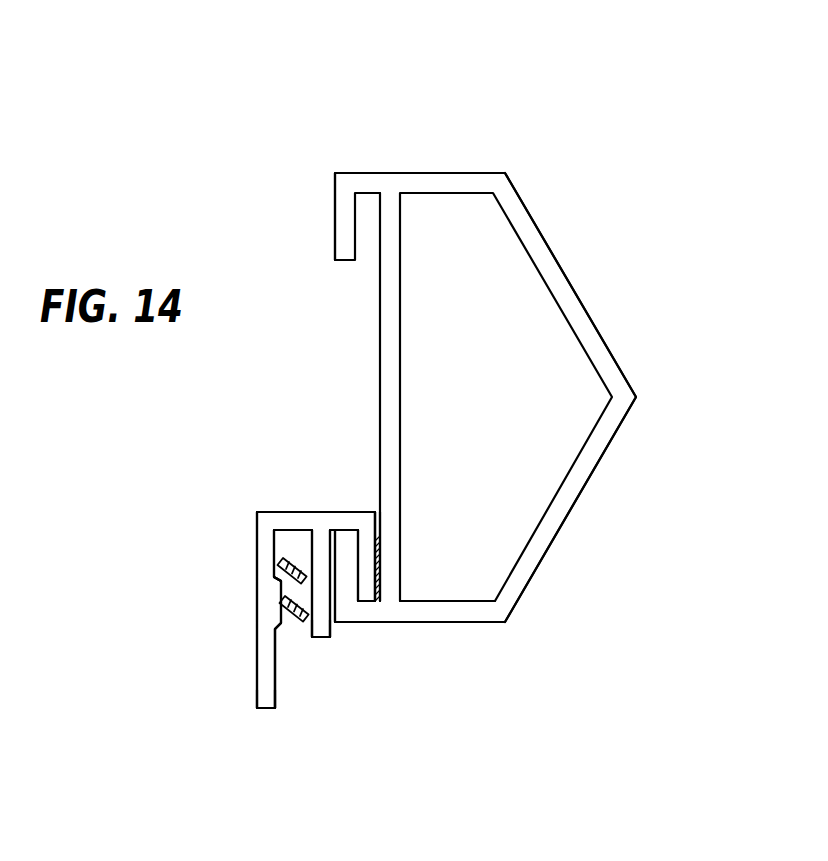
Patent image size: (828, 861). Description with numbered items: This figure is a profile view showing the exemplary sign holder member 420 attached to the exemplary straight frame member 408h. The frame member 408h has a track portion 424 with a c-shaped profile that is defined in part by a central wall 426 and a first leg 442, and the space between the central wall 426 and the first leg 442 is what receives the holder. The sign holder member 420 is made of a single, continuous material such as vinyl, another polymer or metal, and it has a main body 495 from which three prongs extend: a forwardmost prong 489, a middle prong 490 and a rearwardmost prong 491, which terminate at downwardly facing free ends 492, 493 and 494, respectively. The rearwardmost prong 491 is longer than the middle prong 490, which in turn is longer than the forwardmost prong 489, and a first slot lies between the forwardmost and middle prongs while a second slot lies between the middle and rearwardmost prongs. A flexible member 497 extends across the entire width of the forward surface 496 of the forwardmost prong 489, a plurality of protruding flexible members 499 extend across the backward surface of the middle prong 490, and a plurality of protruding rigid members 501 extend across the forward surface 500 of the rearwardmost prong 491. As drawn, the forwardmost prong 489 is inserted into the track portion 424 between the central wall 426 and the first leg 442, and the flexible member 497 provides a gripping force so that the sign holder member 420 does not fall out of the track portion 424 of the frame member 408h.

The straight frame member 408h is at (662, 145).
The track portion 424 is at (402, 160).
The central wall 426 is at (403, 418).
The sign holder member 420 is at (265, 490).
The middle prong 490 is at (313, 550).
The main body 495 is at (323, 517).
The forward surface 496 is at (377, 515).
The forwardmost prong 489 is at (367, 540).
The flexible member 497 is at (377, 553).
The first leg 442 is at (347, 580).
The protruding flexible members 499 is at (305, 583).
The protruding rigid members 501 is at (269, 622).
The rearwardmost prong 491 is at (258, 660).
The free end 493 is at (317, 637).
The free end 492 is at (362, 602).
The free end 494 is at (265, 710).
The forward surface 500 is at (275, 687).